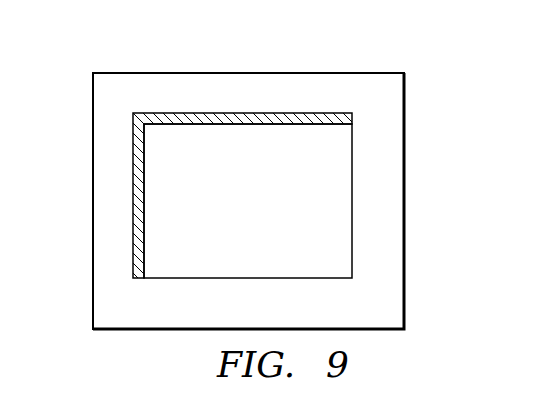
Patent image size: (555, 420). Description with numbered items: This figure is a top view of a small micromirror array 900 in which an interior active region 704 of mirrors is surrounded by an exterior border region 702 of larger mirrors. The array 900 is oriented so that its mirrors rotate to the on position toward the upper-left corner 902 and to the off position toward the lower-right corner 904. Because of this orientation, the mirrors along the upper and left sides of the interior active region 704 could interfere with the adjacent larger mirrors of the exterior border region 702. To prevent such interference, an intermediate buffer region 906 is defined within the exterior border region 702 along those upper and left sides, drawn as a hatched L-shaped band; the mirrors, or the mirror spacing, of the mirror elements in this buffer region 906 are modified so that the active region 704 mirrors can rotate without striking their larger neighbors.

The micromirror array 900 is at (390, 50).
The corner 902 is at (93, 73).
The corner 904 is at (404, 329).
The buffer region 906 is at (195, 117).
The exterior border region 702 is at (107, 148).
The interior active region 704 is at (168, 260).